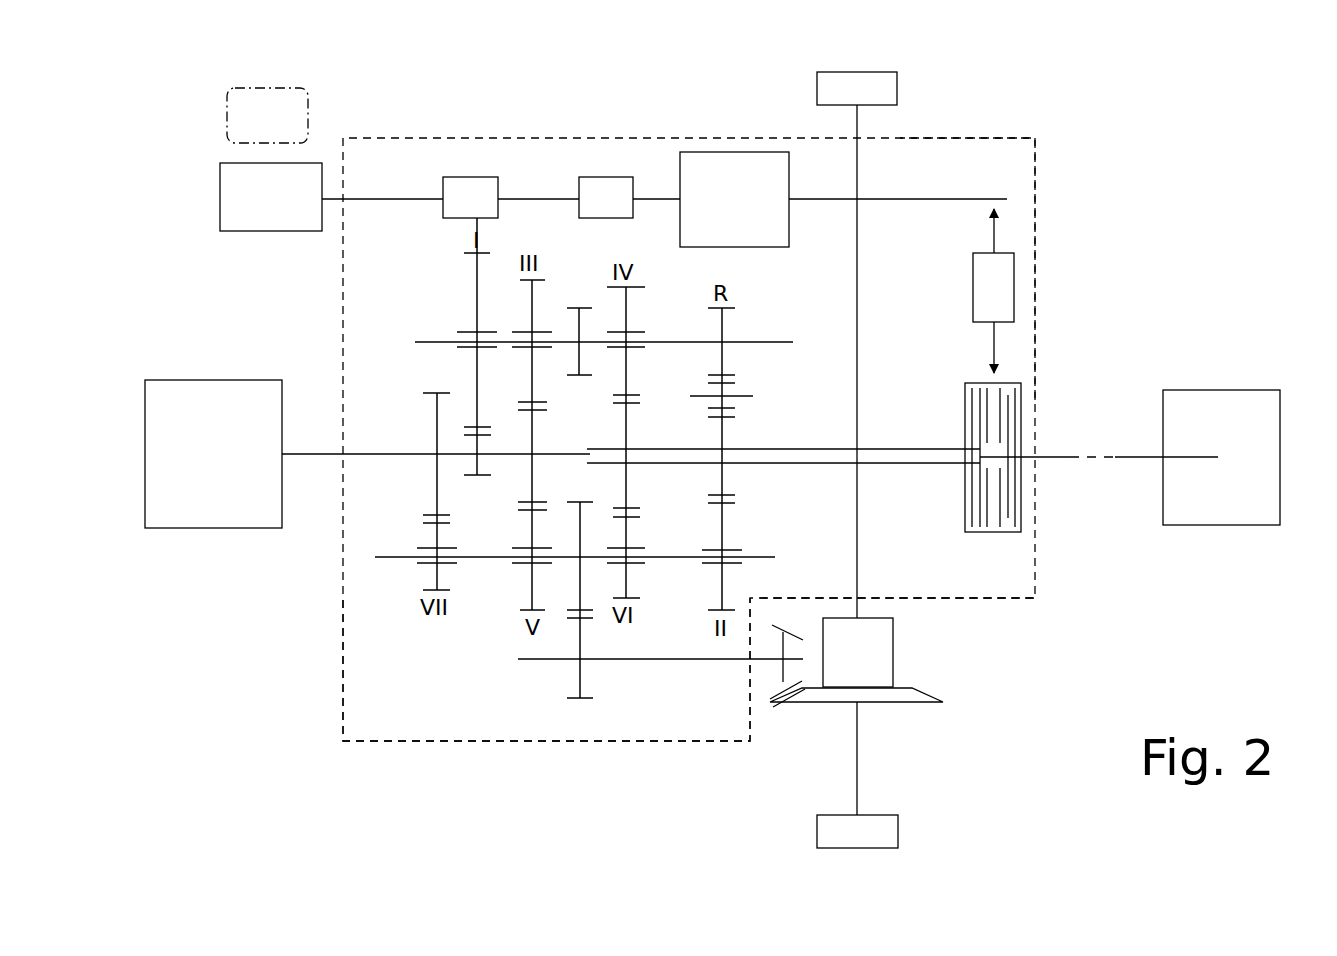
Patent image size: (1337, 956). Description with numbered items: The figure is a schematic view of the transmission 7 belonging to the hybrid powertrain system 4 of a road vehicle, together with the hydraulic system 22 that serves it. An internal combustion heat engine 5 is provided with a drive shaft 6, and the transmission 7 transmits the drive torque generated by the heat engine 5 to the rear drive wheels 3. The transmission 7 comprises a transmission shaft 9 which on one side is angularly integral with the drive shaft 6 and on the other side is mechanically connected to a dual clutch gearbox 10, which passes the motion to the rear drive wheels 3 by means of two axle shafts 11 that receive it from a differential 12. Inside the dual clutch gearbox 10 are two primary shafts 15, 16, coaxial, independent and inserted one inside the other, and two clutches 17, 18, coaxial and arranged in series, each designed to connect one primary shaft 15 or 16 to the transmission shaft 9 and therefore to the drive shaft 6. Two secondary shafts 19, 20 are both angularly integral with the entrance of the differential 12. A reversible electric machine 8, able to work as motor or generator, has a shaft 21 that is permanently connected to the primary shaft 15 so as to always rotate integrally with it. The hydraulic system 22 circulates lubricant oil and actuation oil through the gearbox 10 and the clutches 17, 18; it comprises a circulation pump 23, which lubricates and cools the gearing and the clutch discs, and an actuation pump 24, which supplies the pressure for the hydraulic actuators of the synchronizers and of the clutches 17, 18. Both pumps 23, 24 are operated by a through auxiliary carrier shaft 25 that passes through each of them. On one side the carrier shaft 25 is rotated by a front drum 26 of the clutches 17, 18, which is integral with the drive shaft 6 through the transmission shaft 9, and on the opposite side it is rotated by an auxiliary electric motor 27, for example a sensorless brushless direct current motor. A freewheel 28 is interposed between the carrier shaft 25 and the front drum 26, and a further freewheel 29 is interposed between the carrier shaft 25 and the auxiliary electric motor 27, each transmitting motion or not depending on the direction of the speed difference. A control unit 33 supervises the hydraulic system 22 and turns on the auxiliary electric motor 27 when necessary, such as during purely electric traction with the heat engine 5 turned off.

The rear drive wheels 3 is at (857, 460).
The hybrid powertrain system 4 is at (1095, 620).
The internal combustion heat engine 5 is at (1221, 457).
The drive shaft 6 is at (1203, 457).
The transmission 7 is at (1187, 172).
The reversible electric machine 8 is at (213, 454).
The transmission shaft 9 is at (1058, 456).
The dual clutch gearbox 10 is at (385, 782).
The axle shafts 11 is at (860, 115).
The differential 12 is at (950, 664).
The primary shaft 15 is at (397, 453).
The primary shaft 16 is at (800, 448).
The clutch 17 is at (1013, 366).
The clutch 18 is at (970, 545).
The secondary shaft 19 is at (430, 342).
The secondary shaft 20 is at (473, 558).
The shaft 21 is at (325, 453).
The hydraulic system 22 is at (565, 100).
The circulation pump 23 is at (629, 197).
The actuation pump 24 is at (734, 199).
The auxiliary carrier shaft 25 is at (960, 205).
The front drum 26 is at (975, 383).
The auxiliary electric motor 27 is at (331, 197).
The freewheel 28 is at (1026, 287).
The freewheel 29 is at (511, 197).
The control unit 33 is at (267, 115).